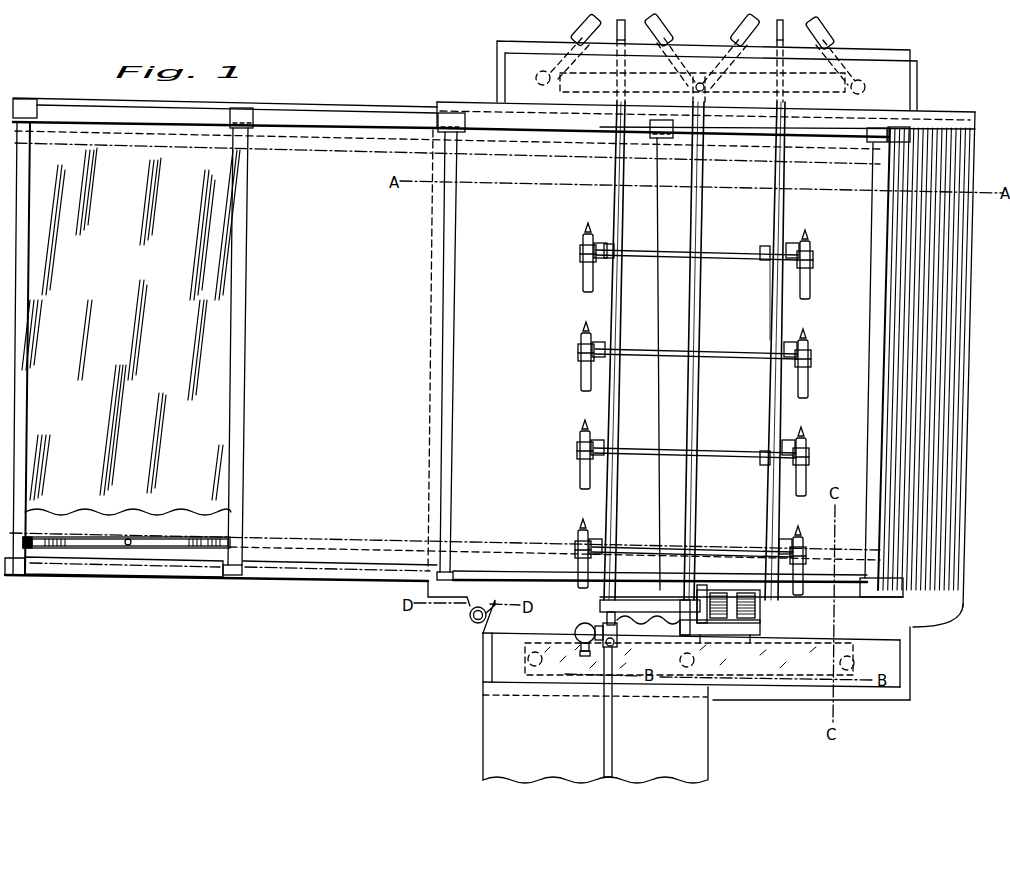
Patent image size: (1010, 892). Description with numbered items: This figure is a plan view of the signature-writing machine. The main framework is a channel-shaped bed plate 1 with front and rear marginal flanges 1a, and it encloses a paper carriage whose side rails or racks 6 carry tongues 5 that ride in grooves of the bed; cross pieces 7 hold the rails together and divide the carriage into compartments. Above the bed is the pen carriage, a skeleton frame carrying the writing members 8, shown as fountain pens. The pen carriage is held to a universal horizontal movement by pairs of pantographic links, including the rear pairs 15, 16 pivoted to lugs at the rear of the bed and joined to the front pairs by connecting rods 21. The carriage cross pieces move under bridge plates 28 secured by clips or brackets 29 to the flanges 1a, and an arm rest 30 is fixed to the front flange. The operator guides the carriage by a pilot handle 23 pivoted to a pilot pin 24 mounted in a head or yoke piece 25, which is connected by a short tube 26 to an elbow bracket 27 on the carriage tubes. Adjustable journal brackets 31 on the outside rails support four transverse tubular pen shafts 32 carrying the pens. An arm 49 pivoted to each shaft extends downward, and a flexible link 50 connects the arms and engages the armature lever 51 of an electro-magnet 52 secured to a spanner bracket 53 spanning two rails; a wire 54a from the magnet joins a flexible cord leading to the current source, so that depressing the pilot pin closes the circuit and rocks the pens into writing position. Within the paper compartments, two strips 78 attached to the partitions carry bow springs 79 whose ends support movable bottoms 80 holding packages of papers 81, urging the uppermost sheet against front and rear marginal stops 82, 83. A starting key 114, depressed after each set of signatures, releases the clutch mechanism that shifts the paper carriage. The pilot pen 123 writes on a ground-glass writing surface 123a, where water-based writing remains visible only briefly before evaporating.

The bed plate 1 is at (950, 263).
The marginal flanges 1a is at (868, 54).
The tongues 5 is at (398, 108).
The racks 6 is at (447, 138).
The cross pieces 7 is at (242, 247).
The writing members 8 is at (812, 282).
The pantographic links 15 is at (623, 49).
The pantographic links 16 is at (779, 50).
The connecting rods 21 is at (623, 37).
The pilot handle 23 is at (613, 728).
The pilot pin 24 is at (618, 650).
The head or yoke piece 25 is at (611, 628).
The short tube 26 is at (615, 620).
The elbow bracket 27 is at (598, 603).
The bridge plates 28 is at (712, 357).
The clips or brackets 29 is at (917, 70).
The arm rest 30 is at (586, 693).
The adjustable journal brackets 31 is at (620, 255).
The pen shafts 32 is at (728, 257).
The arm 49 is at (767, 250).
The link 50 is at (767, 278).
The armature lever 51 is at (718, 592).
The electro-magnet 52 is at (780, 607).
The spanner bracket 53 is at (778, 630).
The wire 54a is at (733, 630).
The strips 78 is at (25, 537).
The bow springs 79 is at (157, 545).
The movable bottoms 80 is at (131, 331).
The papers 81 is at (445, 538).
The front marginal stops 82 is at (165, 577).
The rear marginal stops 83 is at (250, 112).
The starting key 114 is at (470, 619).
The pilot pen 123 is at (580, 657).
The writing surface 123a is at (557, 673).